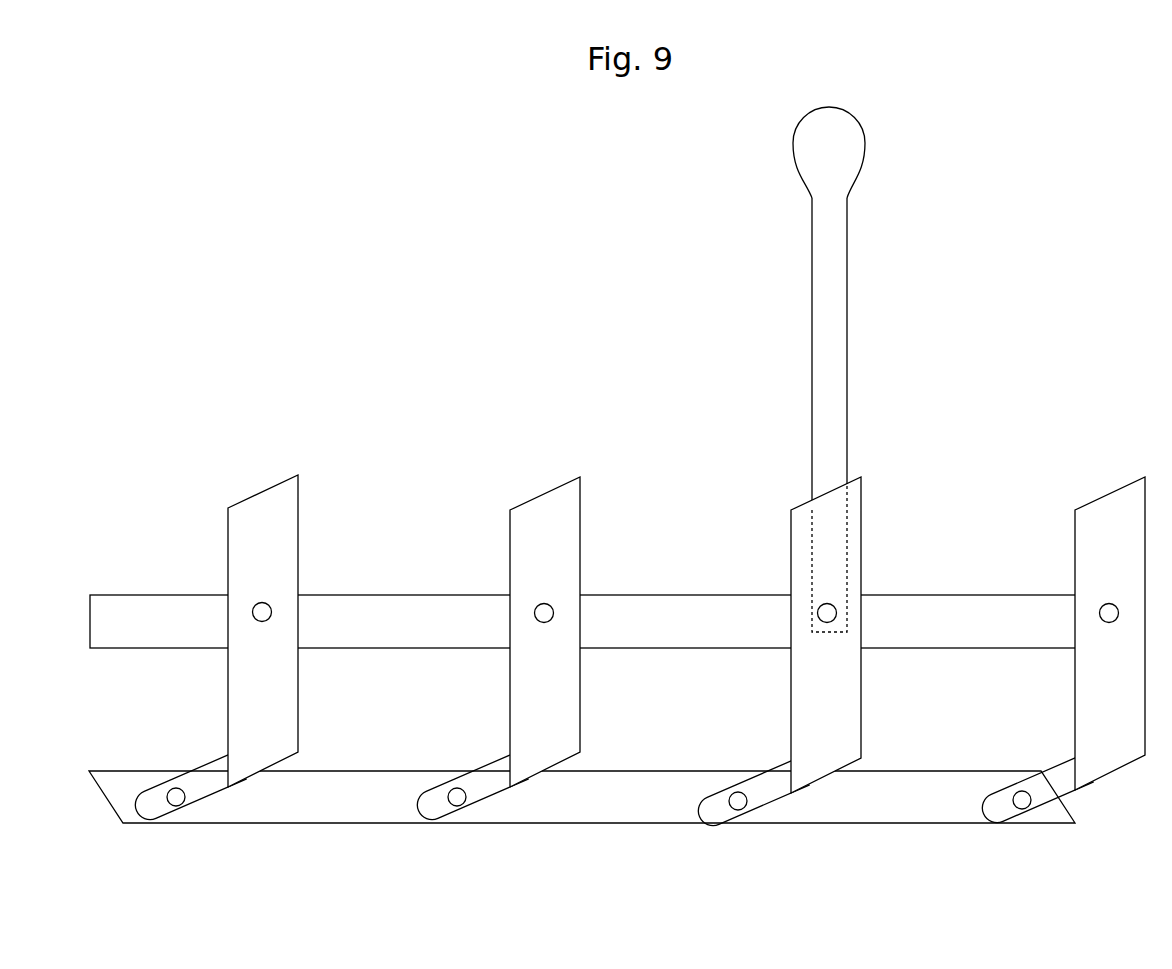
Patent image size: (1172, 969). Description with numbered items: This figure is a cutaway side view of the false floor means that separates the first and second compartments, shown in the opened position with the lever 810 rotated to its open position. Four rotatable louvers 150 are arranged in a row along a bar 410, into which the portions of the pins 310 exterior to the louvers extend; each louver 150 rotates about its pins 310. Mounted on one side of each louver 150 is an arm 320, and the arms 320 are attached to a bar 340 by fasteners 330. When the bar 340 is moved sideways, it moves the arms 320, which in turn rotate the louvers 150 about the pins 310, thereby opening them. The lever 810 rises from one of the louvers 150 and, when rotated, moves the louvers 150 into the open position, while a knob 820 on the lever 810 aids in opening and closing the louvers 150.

The rotatable louver 150 is at (264, 506).
The pin 310 is at (262, 600).
The arm 320 is at (156, 808).
The fastener 330 is at (190, 795).
The bar 340 is at (383, 805).
The bar 410 is at (686, 612).
The lever 810 is at (828, 327).
The knob 820 is at (846, 134).